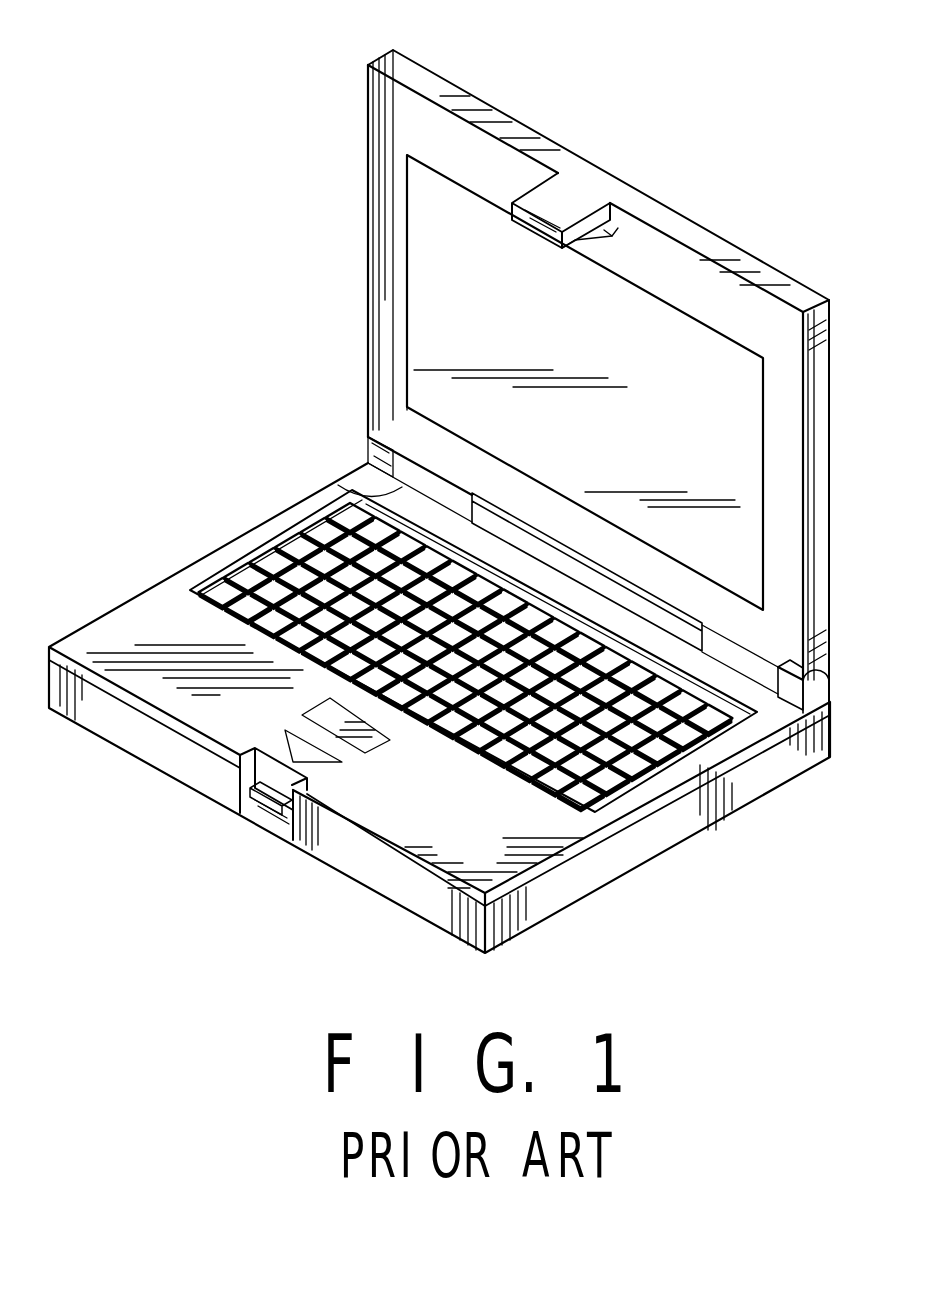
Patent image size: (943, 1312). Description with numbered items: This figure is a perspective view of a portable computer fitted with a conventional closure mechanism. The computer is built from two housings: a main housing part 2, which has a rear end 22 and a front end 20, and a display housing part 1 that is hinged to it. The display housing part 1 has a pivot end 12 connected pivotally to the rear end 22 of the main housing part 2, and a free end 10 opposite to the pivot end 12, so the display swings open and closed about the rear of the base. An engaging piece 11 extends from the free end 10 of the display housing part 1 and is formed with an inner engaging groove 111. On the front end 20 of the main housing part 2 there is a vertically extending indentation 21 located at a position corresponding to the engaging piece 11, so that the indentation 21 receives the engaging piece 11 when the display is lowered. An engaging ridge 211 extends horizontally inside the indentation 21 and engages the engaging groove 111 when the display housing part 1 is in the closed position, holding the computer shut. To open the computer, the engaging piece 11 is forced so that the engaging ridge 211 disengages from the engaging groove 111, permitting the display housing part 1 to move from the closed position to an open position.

The display housing part 1 is at (348, 125).
The free end 10 is at (384, 87).
The engaging piece 11 is at (572, 204).
The inner engaging groove 111 is at (612, 236).
The pivot end 12 is at (412, 490).
The main housing part 2 is at (192, 516).
The front end 20 is at (88, 657).
The rear end 22 is at (348, 480).
The engaging ridge 211 is at (258, 820).
The indentation 21 is at (276, 790).